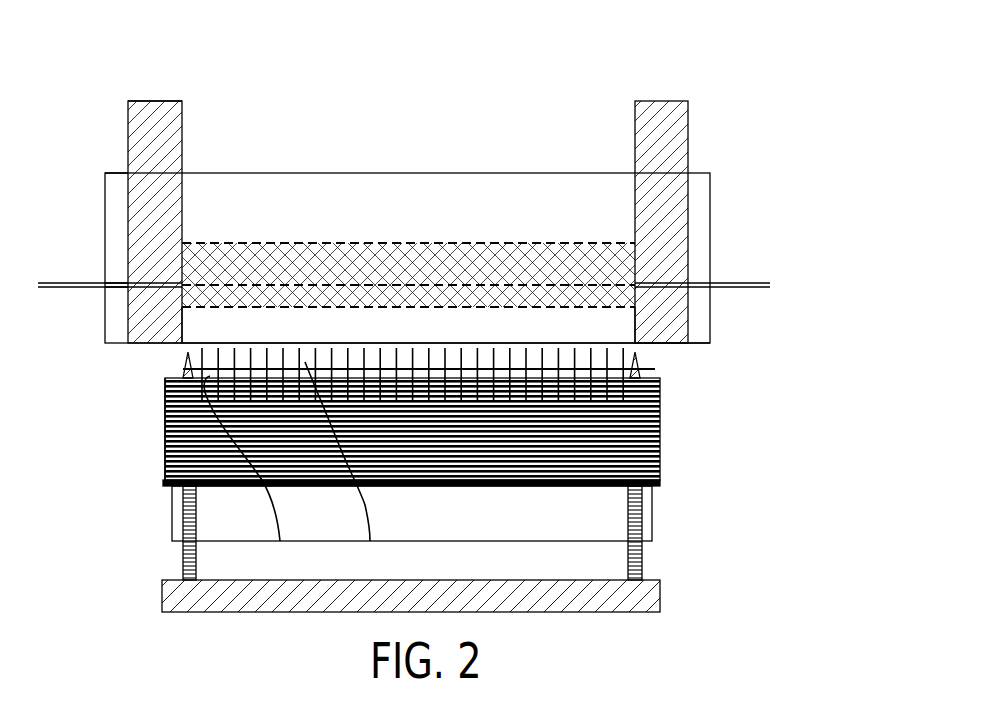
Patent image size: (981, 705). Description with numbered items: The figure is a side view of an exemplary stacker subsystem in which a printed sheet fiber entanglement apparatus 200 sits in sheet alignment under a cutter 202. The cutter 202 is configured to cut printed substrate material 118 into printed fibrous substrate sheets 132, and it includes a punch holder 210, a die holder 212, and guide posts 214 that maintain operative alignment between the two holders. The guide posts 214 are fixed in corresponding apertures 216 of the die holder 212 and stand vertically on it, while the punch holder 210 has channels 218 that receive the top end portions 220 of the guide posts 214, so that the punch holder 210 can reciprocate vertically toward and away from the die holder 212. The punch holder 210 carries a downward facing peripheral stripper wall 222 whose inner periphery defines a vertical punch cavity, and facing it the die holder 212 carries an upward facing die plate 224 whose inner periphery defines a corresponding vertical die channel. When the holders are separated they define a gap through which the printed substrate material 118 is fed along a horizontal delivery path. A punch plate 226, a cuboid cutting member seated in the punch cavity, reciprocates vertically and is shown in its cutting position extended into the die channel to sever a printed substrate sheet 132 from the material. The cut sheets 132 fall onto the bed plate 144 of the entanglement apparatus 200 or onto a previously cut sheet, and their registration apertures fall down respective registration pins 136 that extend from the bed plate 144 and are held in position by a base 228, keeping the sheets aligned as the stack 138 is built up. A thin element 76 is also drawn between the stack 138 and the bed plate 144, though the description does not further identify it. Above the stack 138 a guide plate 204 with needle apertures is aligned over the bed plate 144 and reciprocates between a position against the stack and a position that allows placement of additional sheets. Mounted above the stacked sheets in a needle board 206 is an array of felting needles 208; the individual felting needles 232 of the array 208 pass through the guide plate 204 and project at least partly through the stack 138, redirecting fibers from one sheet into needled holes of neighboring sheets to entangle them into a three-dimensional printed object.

The cutter 202 is at (757, 89).
The printed sheet fiber entanglement apparatus 200 is at (80, 400).
The punch holder 210 is at (712, 178).
The guide posts 214 is at (182, 123).
The top end portions 220 is at (128, 108).
The channels 218 is at (128, 173).
The peripheral stripper wall 222 is at (105, 284).
The die plate 224 is at (105, 287).
The printed substrate material 118 is at (58, 283).
The punch plate 226 is at (285, 243).
The die holder 212 is at (712, 335).
The apertures 216 is at (690, 344).
The needle board 206 is at (185, 347).
The array of felting needles 208 is at (173, 365).
The guide plate 204 is at (655, 370).
The stack 138 is at (663, 427).
The printed substrate sheets 132 is at (165, 467).
The thin plate 76 is at (640, 490).
The bed plate 144 is at (650, 540).
The registration pins 136 is at (182, 560).
The base 228 is at (660, 597).
The felting needles 232 is at (298, 467).